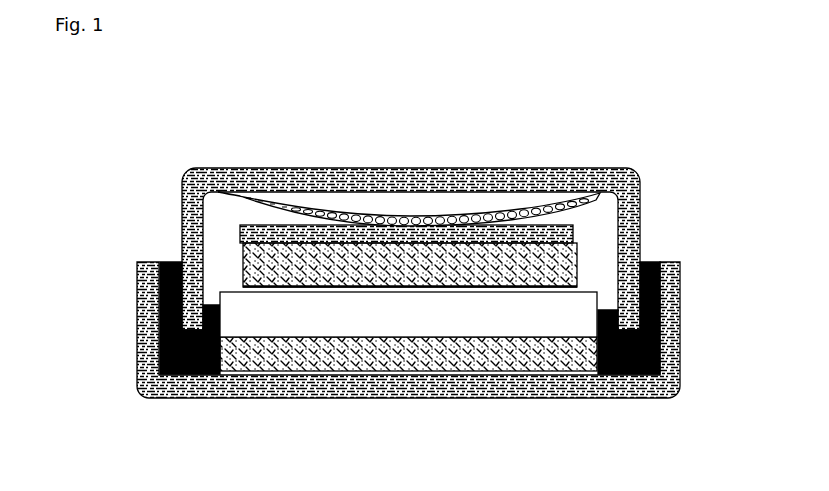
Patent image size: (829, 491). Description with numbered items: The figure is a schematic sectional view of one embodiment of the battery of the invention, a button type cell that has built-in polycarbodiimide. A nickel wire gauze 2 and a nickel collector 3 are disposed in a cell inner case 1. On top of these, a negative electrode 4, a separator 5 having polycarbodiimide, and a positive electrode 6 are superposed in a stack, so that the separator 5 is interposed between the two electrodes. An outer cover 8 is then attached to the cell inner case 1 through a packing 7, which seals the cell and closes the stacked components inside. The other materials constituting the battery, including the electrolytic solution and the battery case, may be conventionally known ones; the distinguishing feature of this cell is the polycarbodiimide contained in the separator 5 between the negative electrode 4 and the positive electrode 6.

The cell inner case 1 is at (318, 175).
The nickel wire gauze 2 is at (597, 193).
The nickel collector 3 is at (573, 233).
The negative electrode 4 is at (558, 264).
The separator 5 is at (565, 313).
The positive electrode 6 is at (578, 352).
The packing 7 is at (660, 377).
The outer cover 8 is at (150, 388).